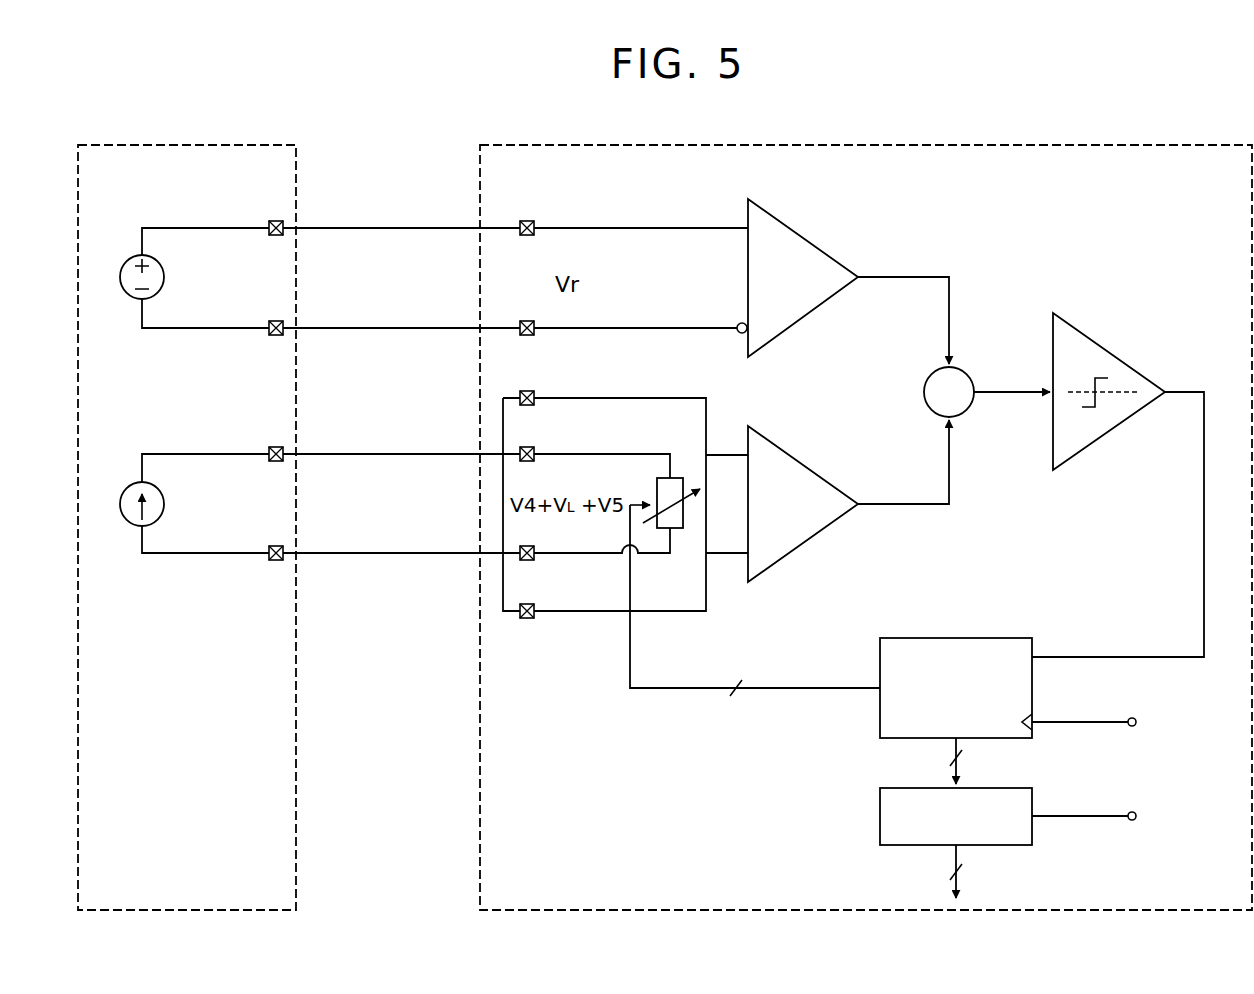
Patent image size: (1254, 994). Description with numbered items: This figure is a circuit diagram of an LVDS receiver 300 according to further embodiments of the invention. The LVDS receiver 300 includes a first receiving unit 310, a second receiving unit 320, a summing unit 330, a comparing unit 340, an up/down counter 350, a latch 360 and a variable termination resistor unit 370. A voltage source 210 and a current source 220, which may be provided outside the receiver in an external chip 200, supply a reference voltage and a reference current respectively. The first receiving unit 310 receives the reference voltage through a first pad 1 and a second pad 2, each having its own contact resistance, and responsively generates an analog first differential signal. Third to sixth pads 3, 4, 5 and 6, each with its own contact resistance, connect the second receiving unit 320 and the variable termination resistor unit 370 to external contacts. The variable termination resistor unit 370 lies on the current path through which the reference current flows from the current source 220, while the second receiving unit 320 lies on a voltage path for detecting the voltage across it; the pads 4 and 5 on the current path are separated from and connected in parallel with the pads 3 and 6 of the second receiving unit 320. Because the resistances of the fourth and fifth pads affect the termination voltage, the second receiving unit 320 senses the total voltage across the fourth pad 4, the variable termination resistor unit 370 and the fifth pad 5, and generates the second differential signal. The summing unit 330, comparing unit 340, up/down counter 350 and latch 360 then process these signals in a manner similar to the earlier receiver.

The first pad 1 is at (520, 228).
The second pad 2 is at (520, 328).
The third pad 3 is at (520, 398).
The fourth pad 4 is at (520, 454).
The fifth pad 5 is at (520, 553).
The sixth pad 6 is at (520, 611).
The external chip 200 is at (298, 400).
The voltage source 210 is at (166, 277).
The current source 220 is at (166, 504).
The LVDS receiver 300 is at (480, 362).
The first receiving unit 310 is at (811, 240).
The second receiving unit 320 is at (811, 468).
The summing unit 330 is at (966, 373).
The comparing unit 340 is at (1115, 355).
The up/down counter 350 is at (953, 638).
The latch 360 is at (1012, 788).
The variable termination resistor unit 370 is at (677, 478).